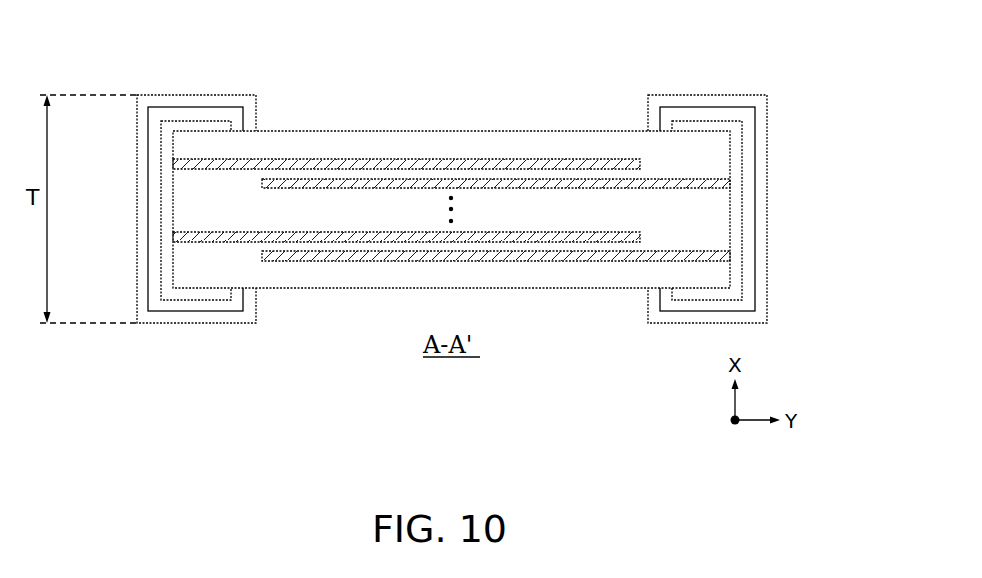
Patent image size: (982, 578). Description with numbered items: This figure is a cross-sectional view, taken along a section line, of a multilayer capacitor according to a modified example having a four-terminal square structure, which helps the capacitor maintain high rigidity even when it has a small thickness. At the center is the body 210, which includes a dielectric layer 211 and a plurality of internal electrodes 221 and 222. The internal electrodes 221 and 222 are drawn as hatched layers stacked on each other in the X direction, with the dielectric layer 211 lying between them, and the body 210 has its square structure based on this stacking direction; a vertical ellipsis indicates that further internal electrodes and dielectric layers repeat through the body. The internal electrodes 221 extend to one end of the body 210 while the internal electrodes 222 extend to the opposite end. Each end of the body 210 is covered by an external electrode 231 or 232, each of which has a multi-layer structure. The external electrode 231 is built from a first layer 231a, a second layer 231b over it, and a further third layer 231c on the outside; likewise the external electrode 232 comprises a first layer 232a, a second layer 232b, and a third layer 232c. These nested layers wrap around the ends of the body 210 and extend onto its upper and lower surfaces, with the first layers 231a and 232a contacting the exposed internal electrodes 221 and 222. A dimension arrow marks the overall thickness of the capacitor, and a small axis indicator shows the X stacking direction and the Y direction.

The body 210 is at (556, 123).
The dielectric layer 211 is at (340, 175).
The internal electrode 221 is at (402, 166).
The internal electrode 222 is at (477, 184).
The external electrode 231 is at (160, 172).
The first layer 231a is at (168, 220).
The second layer 231b is at (158, 191).
The third layer 231c is at (146, 165).
The external electrode 232 is at (743, 171).
The first layer 232a is at (733, 222).
The second layer 232b is at (746, 190).
The third layer 232c is at (757, 163).